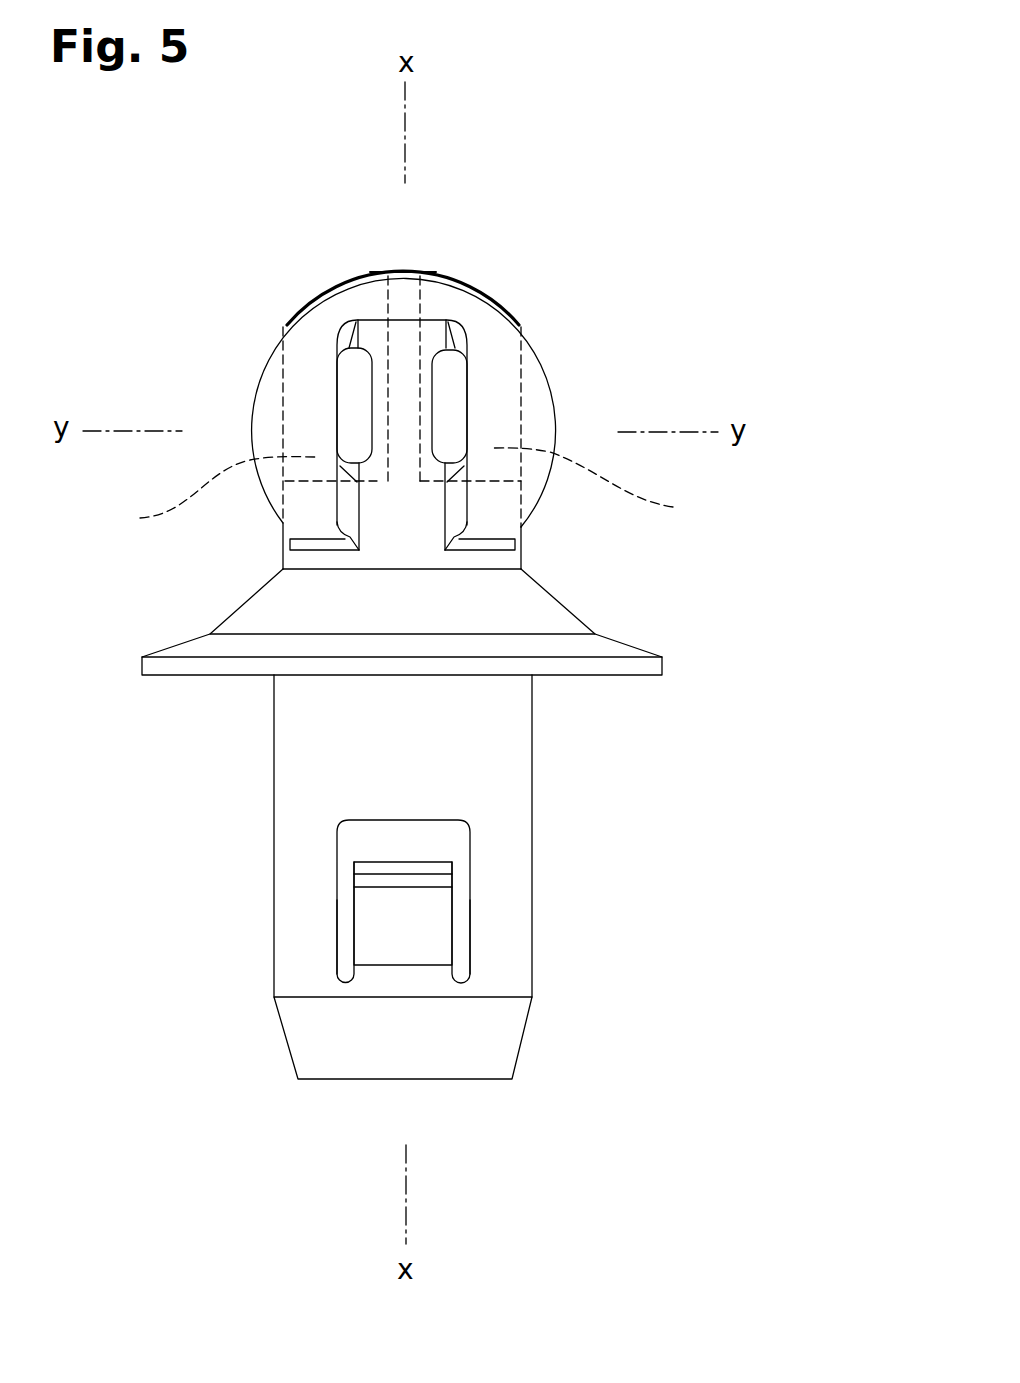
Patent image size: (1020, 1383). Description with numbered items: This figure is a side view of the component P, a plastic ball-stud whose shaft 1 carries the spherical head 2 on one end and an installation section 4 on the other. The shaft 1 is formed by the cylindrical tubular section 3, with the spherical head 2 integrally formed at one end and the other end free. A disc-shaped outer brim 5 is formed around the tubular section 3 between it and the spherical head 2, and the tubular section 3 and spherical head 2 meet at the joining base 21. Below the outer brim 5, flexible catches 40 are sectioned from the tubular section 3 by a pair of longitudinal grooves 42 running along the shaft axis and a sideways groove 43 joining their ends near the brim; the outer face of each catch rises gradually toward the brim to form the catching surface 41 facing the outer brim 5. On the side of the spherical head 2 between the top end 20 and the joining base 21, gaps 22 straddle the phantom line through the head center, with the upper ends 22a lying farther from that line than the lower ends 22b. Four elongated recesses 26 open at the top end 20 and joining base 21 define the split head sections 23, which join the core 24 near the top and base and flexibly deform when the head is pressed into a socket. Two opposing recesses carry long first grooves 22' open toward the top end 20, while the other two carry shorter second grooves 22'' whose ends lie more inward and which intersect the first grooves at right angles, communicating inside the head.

The component P is at (585, 147).
The spherical head 2 is at (537, 395).
The top end 20 is at (403, 272).
The split head sections 23 is at (268, 405).
The gaps 22 is at (433, 377).
The second grooves 22'' is at (433, 377).
The first grooves 22' is at (414, 491).
The upper ends of the gaps 22a is at (352, 383).
The lower ends of the gaps 22b is at (337, 482).
The core 24 is at (402, 400).
The recesses 26 is at (418, 523).
The joining base 21 is at (495, 561).
The outer brim 5 is at (643, 667).
The shaft 1 is at (505, 877).
The tubular section 3 is at (512, 753).
The installation section 4 is at (489, 1005).
The groove 43 is at (430, 842).
The flexible catches 40 is at (411, 942).
The catching surface 41 is at (387, 867).
The longitudinal grooves 42 is at (345, 938).